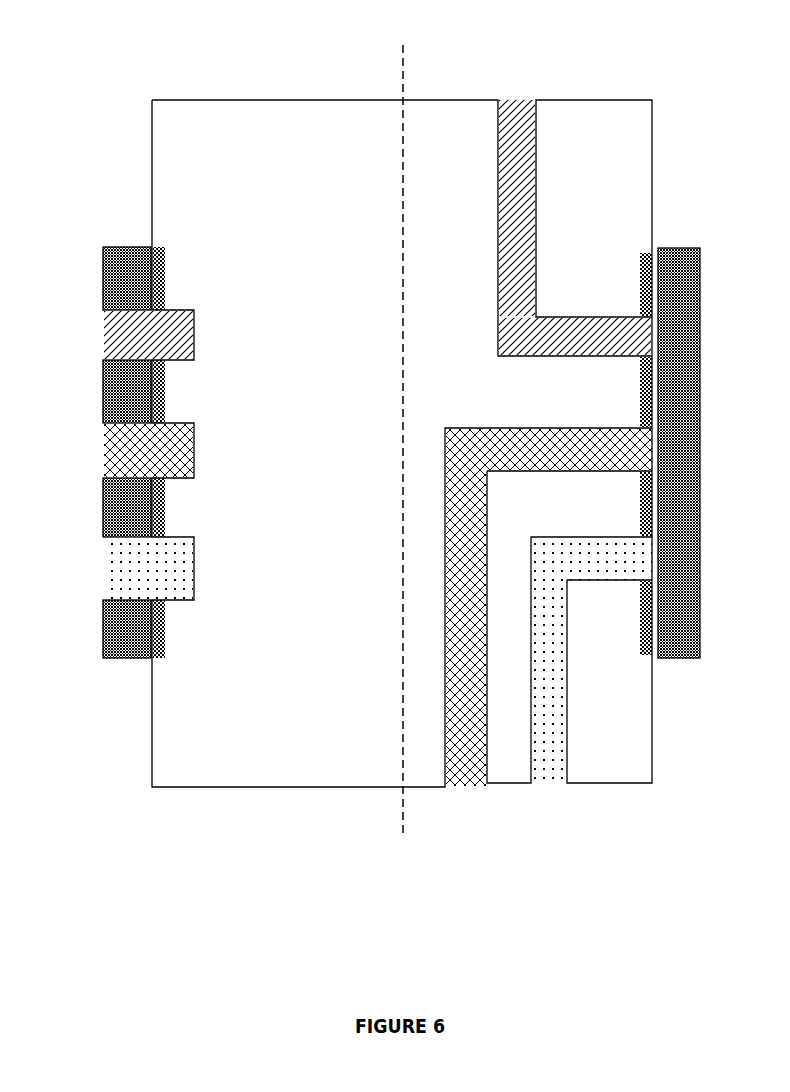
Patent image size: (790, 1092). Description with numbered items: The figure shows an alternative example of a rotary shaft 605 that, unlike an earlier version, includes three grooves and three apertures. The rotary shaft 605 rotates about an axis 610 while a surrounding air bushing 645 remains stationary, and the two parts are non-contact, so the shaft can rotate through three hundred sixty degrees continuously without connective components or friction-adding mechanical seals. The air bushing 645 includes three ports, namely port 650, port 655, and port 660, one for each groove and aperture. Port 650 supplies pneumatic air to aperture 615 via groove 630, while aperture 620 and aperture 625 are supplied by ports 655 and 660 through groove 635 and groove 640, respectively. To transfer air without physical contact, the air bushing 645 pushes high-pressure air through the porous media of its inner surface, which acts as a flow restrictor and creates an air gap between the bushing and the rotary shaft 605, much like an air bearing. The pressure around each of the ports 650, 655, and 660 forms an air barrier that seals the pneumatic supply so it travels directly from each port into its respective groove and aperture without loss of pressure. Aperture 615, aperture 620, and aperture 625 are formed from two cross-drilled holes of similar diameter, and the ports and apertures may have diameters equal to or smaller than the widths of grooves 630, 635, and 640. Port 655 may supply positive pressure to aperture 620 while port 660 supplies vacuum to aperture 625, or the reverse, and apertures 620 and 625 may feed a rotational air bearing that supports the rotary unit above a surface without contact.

The rotary shaft 605 is at (140, 108).
The axis 610 is at (392, 68).
The aperture 615 is at (486, 285).
The aperture 620 is at (433, 553).
The aperture 625 is at (518, 636).
The groove 630 is at (206, 330).
The groove 635 is at (206, 440).
The groove 640 is at (206, 562).
The air bushing 645 is at (93, 253).
The port 650 is at (93, 330).
The port 655 is at (93, 452).
The port 660 is at (93, 570).